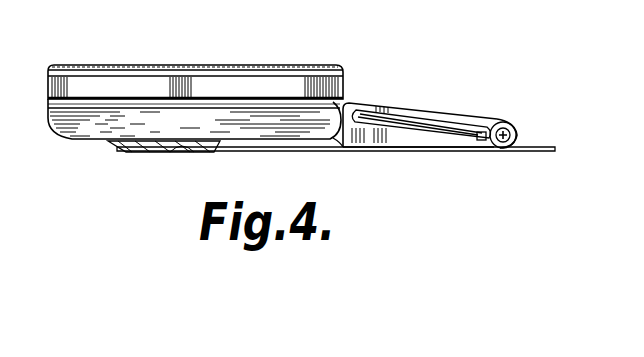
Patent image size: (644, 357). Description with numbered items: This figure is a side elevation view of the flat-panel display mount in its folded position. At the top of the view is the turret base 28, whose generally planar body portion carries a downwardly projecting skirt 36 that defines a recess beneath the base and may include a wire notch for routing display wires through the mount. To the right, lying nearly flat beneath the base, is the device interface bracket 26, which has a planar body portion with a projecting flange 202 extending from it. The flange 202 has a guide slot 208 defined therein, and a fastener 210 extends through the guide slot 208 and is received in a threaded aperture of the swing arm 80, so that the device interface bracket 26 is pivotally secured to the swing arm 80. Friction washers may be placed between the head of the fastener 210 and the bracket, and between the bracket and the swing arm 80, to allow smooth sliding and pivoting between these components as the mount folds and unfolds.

The turret base 28 is at (343, 70).
The skirt 36 is at (76, 127).
The device interface bracket 26 is at (541, 152).
The projecting flange 202 is at (392, 105).
The guide slot 208 is at (463, 127).
The fastener 210 is at (520, 126).
The swing arm 80 is at (334, 143).